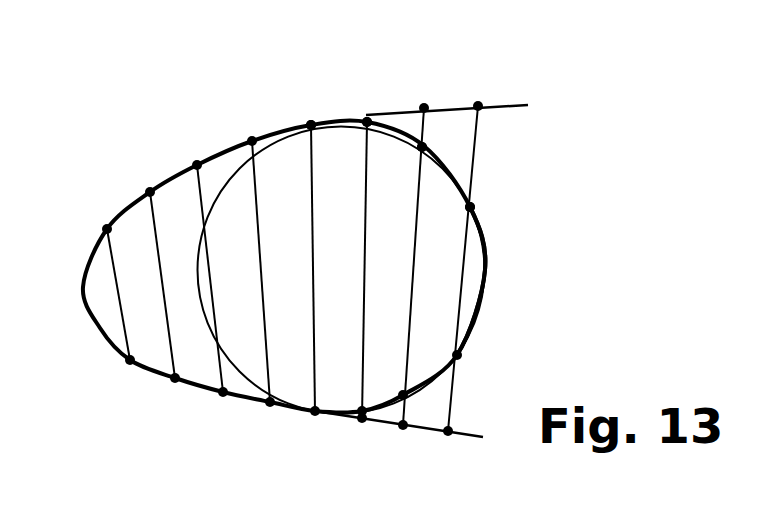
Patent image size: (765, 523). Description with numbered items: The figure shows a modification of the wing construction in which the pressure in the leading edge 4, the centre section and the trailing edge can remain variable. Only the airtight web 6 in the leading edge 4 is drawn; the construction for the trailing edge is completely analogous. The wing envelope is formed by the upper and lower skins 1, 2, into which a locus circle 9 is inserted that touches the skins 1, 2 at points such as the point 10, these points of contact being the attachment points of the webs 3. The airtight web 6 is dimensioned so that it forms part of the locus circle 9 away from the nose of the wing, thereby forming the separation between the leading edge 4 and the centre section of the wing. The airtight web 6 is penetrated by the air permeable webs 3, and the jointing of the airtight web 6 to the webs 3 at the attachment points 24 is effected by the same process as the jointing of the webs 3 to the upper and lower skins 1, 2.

The upper skin 1 is at (528, 105).
The lower skin 2 is at (470, 438).
The webs 3 is at (366, 323).
The leading edge 4 is at (143, 278).
The airtight web 6 is at (485, 265).
The locus circle 9 is at (233, 170).
The point 10 is at (311, 125).
The attachment points 24 is at (470, 207).